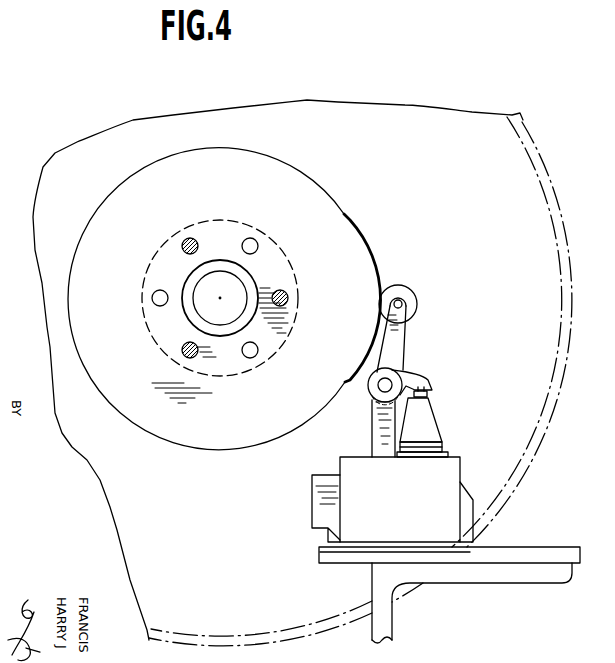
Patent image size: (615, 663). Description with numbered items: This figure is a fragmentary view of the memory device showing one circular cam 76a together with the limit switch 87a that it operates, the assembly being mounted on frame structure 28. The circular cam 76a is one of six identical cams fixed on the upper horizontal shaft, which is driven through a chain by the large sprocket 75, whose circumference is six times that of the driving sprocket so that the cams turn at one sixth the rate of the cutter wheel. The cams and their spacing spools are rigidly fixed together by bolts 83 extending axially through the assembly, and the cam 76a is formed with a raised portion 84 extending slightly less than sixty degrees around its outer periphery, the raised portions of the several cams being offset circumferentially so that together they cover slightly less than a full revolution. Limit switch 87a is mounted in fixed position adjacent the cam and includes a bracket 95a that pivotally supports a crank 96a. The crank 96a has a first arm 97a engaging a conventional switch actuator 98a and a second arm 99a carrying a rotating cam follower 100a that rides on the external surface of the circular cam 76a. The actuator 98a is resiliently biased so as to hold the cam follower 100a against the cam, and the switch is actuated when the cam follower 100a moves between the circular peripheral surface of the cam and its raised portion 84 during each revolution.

The frame structure 28 is at (514, 578).
The sprocket 75 is at (541, 208).
The circular cam 76a is at (318, 197).
The bolt 83 is at (284, 283).
The raised portion 84 is at (366, 255).
The limit switch 87a is at (415, 506).
The bracket 95a is at (385, 422).
The crank 96a is at (408, 364).
The first arm 97a is at (423, 380).
The switch actuator 98a is at (428, 393).
The second arm 99a is at (402, 330).
The cam follower 100a is at (412, 297).